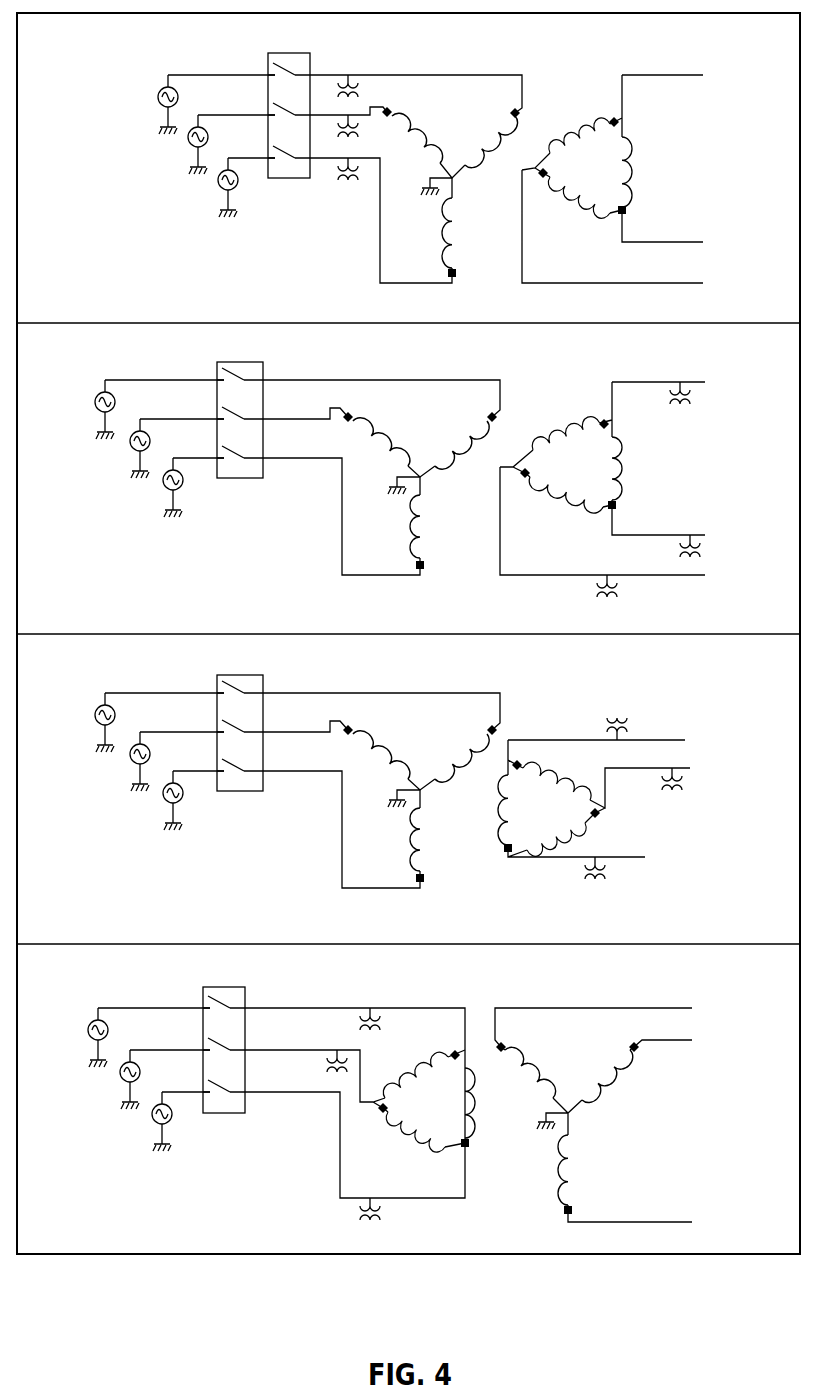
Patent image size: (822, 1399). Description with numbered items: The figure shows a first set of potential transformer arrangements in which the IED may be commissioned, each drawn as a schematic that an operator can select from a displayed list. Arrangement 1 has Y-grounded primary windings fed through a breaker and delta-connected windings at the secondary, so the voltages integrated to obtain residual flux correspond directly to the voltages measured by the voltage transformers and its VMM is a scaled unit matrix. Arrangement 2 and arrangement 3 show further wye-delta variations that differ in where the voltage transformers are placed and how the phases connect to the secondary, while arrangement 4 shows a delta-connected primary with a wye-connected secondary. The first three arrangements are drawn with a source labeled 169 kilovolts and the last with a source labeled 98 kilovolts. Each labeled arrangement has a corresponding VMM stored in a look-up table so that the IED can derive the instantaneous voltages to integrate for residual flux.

The arrangement 1 is at (426, 178).
The arrangement 2 is at (400, 487).
The arrangement 3 is at (392, 794).
The arrangement 4 is at (394, 1111).
The 169 kV source 169 is at (194, 134).
The 98 kV source 98 is at (130, 1071).